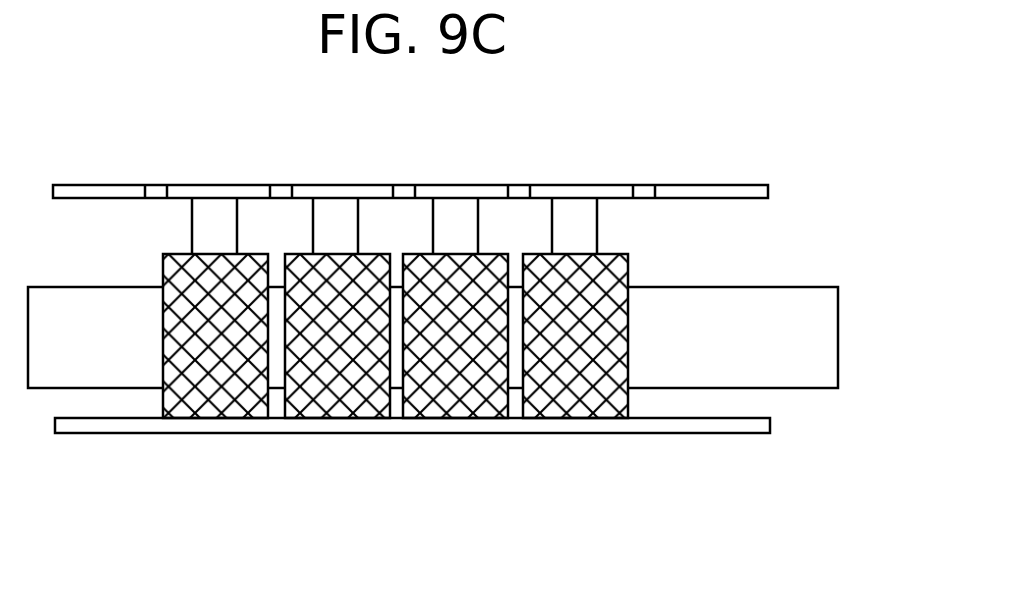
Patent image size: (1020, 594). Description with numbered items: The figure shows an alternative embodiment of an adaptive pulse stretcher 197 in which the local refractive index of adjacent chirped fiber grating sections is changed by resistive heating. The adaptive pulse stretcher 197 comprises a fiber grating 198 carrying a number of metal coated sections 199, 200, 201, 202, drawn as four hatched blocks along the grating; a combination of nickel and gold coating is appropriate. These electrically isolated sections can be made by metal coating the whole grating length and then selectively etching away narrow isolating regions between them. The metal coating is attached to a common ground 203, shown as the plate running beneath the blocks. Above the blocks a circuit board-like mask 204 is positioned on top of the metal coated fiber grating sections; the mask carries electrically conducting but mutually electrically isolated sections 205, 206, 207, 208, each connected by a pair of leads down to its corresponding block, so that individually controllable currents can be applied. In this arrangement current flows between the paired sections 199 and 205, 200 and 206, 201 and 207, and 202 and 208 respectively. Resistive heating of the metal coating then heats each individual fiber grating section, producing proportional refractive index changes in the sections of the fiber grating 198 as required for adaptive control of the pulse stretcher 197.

The adaptive pulse stretcher 197 is at (685, 553).
The fiber grating 198 is at (812, 287).
The metal coated section 199 is at (218, 407).
The metal coated section 200 is at (355, 407).
The metal coated section 201 is at (460, 407).
The metal coated section 202 is at (580, 407).
The common ground 203 is at (760, 433).
The circuit board-like mask 204 is at (742, 185).
The electrically conducting section 205 is at (212, 205).
The electrically conducting section 206 is at (336, 207).
The electrically conducting section 207 is at (450, 205).
The electrically conducting section 208 is at (580, 207).